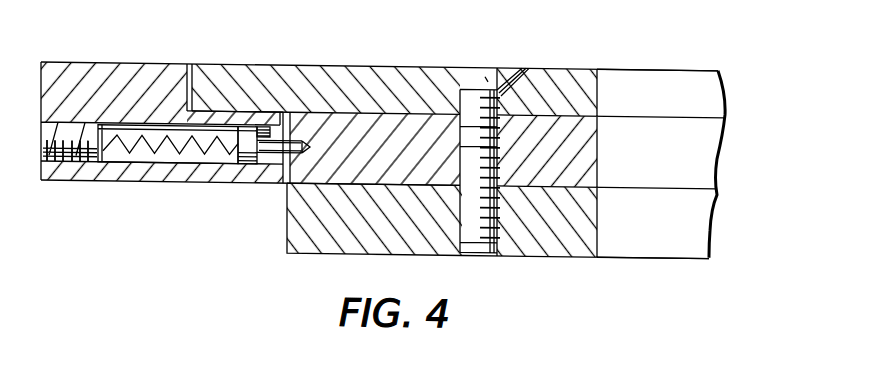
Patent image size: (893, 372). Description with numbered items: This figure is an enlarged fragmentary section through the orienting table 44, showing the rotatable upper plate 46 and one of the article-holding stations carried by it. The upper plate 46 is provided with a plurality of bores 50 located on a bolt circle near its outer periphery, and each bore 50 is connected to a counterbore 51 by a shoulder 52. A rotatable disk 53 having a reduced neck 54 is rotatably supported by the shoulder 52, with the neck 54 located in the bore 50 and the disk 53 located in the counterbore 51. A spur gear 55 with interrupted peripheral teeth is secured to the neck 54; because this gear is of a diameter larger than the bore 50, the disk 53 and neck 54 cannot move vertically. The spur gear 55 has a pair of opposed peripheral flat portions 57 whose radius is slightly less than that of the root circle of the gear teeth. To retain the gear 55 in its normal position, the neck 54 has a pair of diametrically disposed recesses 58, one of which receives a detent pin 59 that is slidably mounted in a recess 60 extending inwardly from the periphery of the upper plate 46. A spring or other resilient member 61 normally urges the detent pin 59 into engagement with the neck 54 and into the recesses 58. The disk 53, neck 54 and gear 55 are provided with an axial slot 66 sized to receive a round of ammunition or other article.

The orienting table 44 is at (90, 56).
The upper plate 46 is at (128, 70).
The bore 50 is at (280, 163).
The counterbore 51 is at (182, 76).
The shoulder 52 is at (237, 106).
The rotatable disk 53 is at (340, 81).
The neck 54 is at (552, 120).
The spur gear 55 is at (346, 236).
The peripheral flat portions 57 is at (286, 219).
The recesses 58 is at (307, 147).
The detent pin 59 is at (262, 155).
The recess 60 is at (138, 162).
The spring 61 is at (113, 162).
The axial slot 66 is at (677, 85).